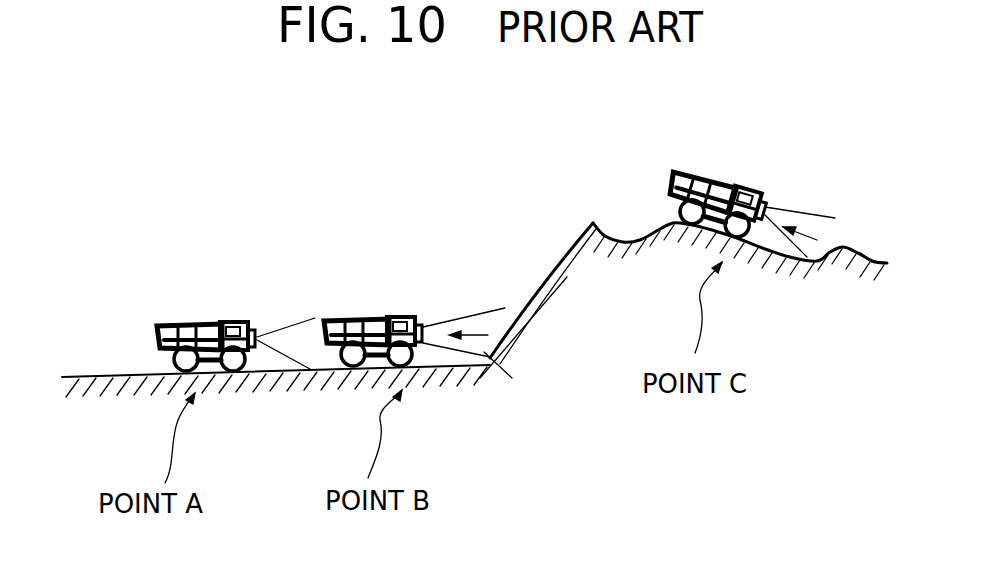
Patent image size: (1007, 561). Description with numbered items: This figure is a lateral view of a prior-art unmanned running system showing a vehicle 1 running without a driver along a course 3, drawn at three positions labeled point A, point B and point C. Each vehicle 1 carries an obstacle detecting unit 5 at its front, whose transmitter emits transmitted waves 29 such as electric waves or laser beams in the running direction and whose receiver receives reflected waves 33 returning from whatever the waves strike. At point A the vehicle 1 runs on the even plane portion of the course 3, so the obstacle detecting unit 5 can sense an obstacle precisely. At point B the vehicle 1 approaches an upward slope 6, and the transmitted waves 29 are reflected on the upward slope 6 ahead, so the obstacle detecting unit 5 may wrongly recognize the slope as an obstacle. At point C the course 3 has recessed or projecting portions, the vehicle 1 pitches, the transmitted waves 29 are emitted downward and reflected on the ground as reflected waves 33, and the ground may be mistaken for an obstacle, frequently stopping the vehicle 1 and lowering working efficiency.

The vehicle 1 is at (196, 327).
The course 3 is at (99, 375).
The obstacle detecting unit 5 is at (257, 367).
The upward slope 6 is at (548, 262).
The transmitted waves 29 is at (280, 322).
The reflected waves 33 is at (487, 337).